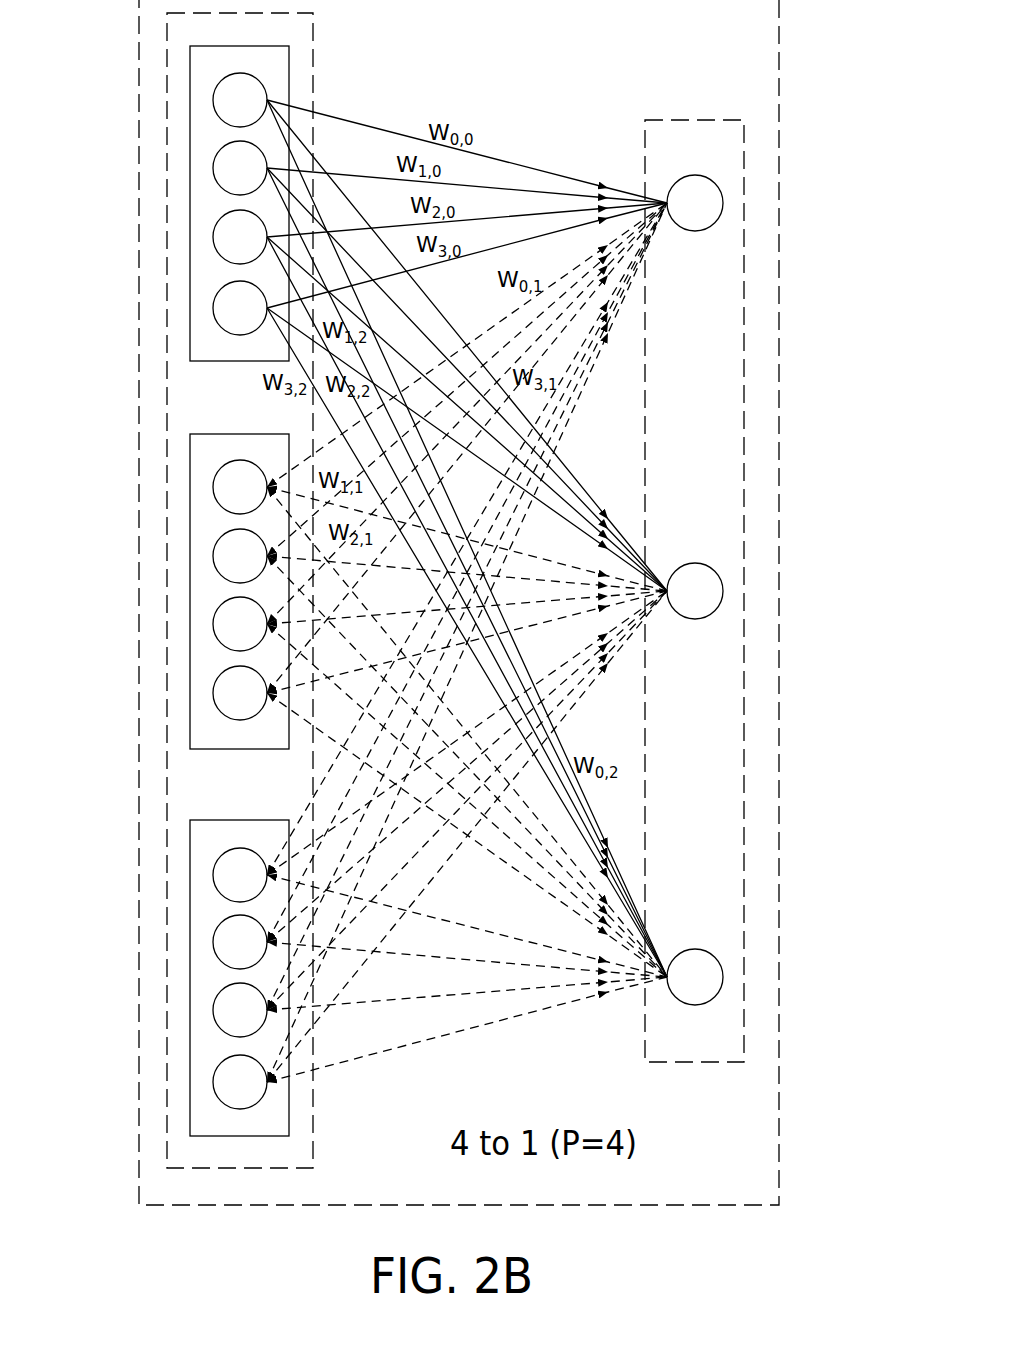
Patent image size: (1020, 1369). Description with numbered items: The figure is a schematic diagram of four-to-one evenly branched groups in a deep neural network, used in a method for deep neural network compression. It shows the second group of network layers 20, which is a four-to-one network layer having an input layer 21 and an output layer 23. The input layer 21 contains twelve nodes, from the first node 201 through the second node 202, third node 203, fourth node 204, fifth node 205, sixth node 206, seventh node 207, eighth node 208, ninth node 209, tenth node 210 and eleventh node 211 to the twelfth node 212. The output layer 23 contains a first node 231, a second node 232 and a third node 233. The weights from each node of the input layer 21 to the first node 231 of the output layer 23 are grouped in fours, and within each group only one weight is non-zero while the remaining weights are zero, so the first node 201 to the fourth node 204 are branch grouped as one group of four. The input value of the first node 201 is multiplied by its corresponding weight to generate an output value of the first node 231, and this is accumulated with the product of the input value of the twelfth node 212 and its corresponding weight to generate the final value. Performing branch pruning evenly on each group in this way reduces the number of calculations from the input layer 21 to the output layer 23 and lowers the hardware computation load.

The second group of network layers 20 is at (780, 27).
The input layer 21 is at (165, 30).
The output layer 23 is at (745, 153).
The first node of the input layer 201 is at (213, 100).
The second node of the input layer 202 is at (213, 168).
The third node of the input layer 203 is at (213, 237).
The fourth node of the input layer 204 is at (213, 308).
The fifth node of the input layer 205 is at (213, 487).
The sixth node of the input layer 206 is at (213, 556).
The seventh node of the input layer 207 is at (213, 624).
The eighth node of the input layer 208 is at (213, 693).
The ninth node of the input layer 209 is at (213, 875).
The tenth node of the input layer 210 is at (213, 942).
The eleventh node of the input layer 211 is at (213, 1010).
The 12th node of the input layer 212 is at (213, 1082).
The first node of the output layer 231 is at (723, 203).
The second node of the output layer 232 is at (723, 591).
The third node of the output layer 233 is at (723, 977).